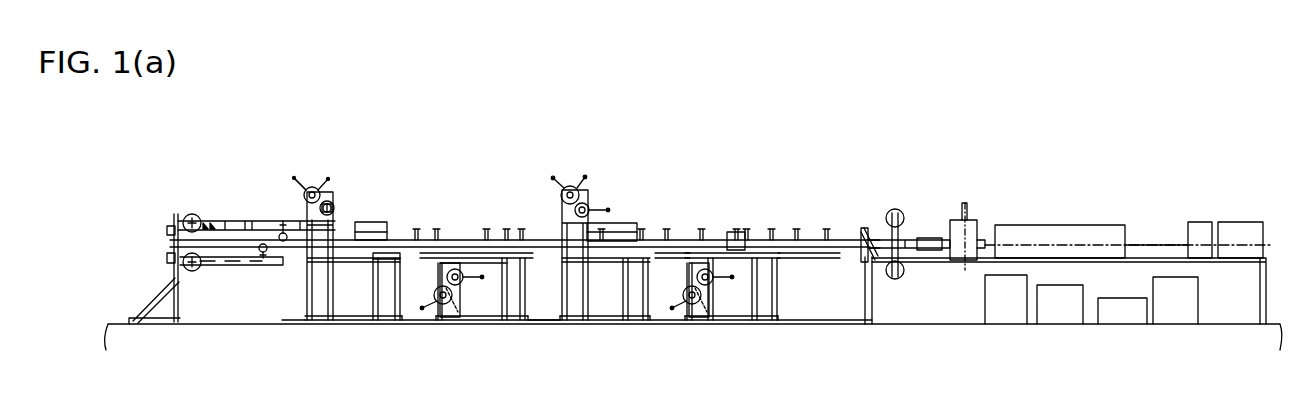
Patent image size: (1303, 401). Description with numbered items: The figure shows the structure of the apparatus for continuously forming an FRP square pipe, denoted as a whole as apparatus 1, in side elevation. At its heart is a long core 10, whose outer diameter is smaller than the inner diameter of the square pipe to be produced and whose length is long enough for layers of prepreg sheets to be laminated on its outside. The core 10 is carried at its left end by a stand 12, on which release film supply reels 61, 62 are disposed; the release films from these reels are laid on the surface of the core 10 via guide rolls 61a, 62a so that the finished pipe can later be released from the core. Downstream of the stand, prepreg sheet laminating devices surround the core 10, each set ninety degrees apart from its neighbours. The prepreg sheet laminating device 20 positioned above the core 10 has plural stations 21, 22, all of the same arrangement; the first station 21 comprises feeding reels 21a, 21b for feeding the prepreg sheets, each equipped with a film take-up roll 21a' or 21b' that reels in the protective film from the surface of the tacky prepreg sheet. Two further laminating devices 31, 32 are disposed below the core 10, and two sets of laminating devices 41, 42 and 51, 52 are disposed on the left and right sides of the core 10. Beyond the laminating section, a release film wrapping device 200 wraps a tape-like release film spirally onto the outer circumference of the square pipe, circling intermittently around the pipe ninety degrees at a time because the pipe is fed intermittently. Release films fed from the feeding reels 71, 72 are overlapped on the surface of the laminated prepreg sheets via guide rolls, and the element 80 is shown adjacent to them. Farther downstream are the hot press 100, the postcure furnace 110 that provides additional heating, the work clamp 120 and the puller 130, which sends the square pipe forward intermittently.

The apparatus for continuously forming an FRP square pipe 1 is at (750, 136).
The core 10 is at (238, 220).
The stand 12 is at (158, 324).
The prepreg sheet laminating device 20 is at (292, 360).
The first station 21 is at (333, 162).
The feeding reel 21a is at (360, 191).
The film take-up roll 21a' is at (368, 208).
The feeding reel 21b is at (293, 168).
The film take-up roll 21b' is at (303, 143).
The station 22 is at (563, 166).
The prepreg sheet laminating device 31 is at (447, 333).
The prepreg sheet laminating device 32 is at (695, 333).
The prepreg sheet laminating device 41 is at (409, 224).
The prepreg sheet laminating device 42 is at (670, 222).
The prepreg sheet laminating device 51 is at (547, 288).
The prepreg sheet laminating device 52 is at (805, 276).
The supply reel 61 is at (189, 214).
The guide roll 61a is at (283, 230).
The supply reel 62 is at (197, 270).
The guide roll 62a is at (265, 253).
The feeding reel 71 is at (895, 208).
The feeding reel 72 is at (901, 277).
The drive table 80 is at (922, 231).
The hot press 100 is at (973, 227).
The postcure furnace 110 is at (1065, 230).
The work clamp 120 is at (1200, 230).
The puller 130 is at (1240, 225).
The release film wrapping device 200 is at (855, 223).